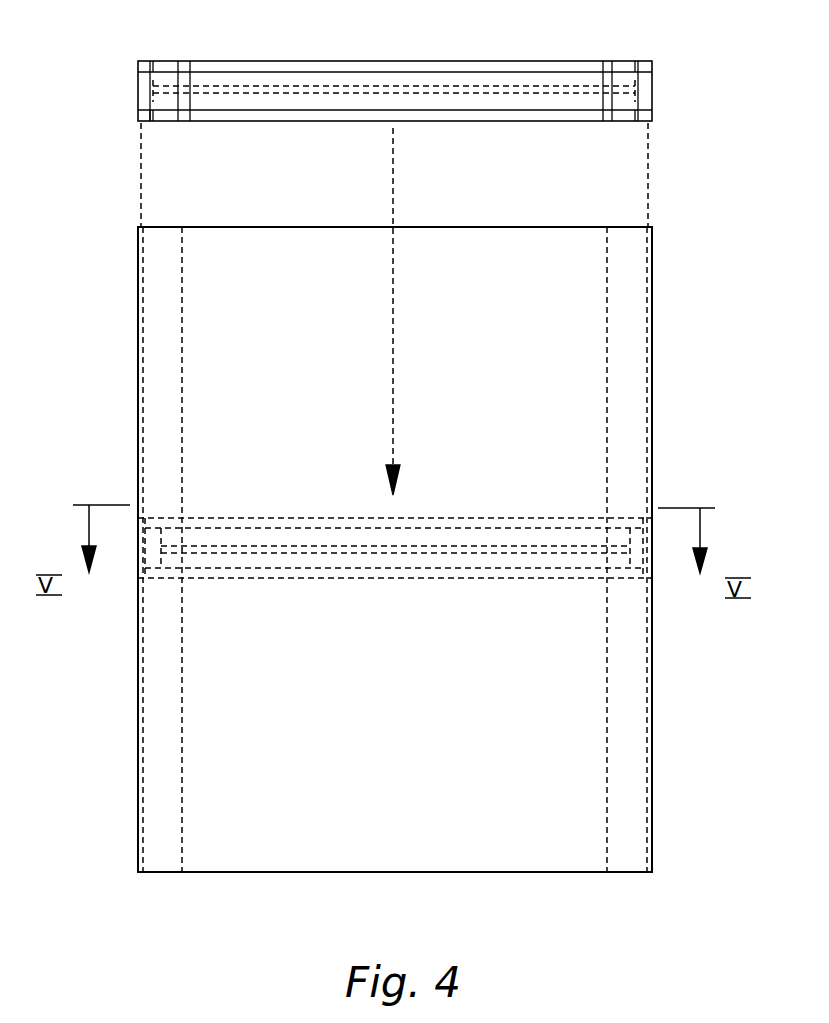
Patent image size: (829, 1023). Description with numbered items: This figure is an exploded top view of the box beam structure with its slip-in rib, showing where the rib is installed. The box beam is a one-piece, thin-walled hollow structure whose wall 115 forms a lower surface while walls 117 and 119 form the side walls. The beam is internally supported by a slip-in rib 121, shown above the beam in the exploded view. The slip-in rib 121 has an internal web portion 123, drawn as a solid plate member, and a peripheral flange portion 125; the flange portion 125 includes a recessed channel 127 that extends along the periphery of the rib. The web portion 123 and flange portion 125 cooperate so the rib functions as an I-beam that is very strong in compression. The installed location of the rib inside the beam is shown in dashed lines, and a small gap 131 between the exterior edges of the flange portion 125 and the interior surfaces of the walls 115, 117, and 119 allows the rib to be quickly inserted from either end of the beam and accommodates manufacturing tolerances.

The wall 115 is at (550, 835).
The wall 117 is at (655, 834).
The wall 119 is at (138, 802).
The slip-in rib 121 is at (645, 61).
The web portion 123 is at (437, 95).
The flange portion 125 is at (390, 93).
The recessed channel 127 is at (655, 89).
The gap 131 is at (138, 434).